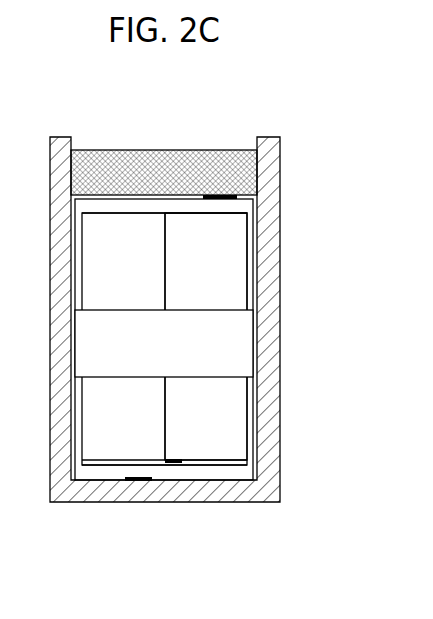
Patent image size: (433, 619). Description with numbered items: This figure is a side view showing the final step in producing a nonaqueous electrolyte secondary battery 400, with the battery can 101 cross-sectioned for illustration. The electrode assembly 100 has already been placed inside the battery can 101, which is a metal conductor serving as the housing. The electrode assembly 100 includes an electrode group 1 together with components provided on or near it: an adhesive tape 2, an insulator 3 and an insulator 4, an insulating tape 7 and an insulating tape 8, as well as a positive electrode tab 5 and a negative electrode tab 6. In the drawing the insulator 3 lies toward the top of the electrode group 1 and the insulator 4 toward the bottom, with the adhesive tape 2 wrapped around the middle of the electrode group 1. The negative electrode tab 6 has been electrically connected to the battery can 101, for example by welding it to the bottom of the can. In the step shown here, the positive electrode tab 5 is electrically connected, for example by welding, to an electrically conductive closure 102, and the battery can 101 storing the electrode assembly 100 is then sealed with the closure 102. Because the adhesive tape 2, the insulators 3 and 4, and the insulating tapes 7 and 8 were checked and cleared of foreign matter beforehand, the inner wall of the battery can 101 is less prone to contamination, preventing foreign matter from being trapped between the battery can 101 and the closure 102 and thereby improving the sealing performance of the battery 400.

The nonaqueous electrolyte secondary battery 400 is at (255, 100).
The battery can 101 is at (241, 495).
The closure 102 is at (126, 165).
The electrode assembly 100 is at (255, 257).
The insulator 3 is at (240, 205).
The positive electrode tab 5 is at (220, 195).
The electrode group 1 is at (240, 285).
The insulating tape 7 is at (168, 197).
The adhesive tape 2 is at (247, 343).
The insulator 4 is at (240, 470).
The insulating tape 8 is at (166, 463).
The negative electrode tab 6 is at (137, 482).